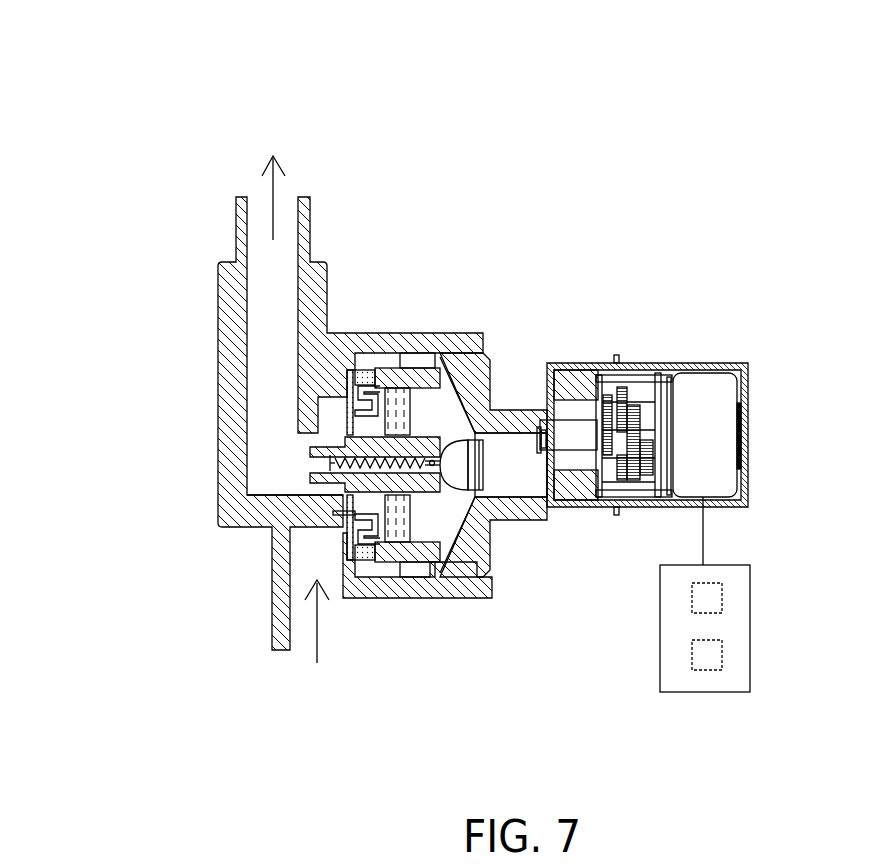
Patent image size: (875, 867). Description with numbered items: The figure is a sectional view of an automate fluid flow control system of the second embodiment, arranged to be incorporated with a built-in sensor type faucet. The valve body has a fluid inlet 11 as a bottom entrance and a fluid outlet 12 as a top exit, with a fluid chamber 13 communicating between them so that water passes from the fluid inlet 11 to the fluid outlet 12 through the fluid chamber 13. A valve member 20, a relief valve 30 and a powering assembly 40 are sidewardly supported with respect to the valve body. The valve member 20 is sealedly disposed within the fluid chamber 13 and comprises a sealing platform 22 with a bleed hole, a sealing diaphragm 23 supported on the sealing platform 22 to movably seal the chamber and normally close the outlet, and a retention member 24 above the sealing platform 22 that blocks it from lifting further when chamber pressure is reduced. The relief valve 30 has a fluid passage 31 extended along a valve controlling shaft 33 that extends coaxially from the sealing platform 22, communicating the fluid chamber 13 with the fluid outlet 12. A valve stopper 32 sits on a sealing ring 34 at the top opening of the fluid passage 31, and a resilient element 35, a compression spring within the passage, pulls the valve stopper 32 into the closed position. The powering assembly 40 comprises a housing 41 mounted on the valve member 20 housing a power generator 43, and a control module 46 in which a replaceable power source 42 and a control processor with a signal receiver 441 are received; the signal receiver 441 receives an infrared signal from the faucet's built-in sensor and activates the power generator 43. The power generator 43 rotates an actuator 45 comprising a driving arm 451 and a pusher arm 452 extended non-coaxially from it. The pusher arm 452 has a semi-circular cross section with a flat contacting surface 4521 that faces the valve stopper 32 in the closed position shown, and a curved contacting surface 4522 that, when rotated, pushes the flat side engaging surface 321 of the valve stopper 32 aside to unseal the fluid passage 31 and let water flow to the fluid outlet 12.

The fluid inlet 11 is at (300, 652).
The fluid outlet 12 is at (254, 155).
The fluid chamber 13 is at (488, 598).
The valve member 20 is at (188, 262).
The sealing platform 22 is at (372, 388).
The sealing diaphragm 23 is at (352, 400).
The retention member 24 is at (413, 372).
The relief valve 30 is at (512, 666).
The fluid passage 31 is at (297, 377).
The valve stopper 32 is at (470, 467).
The side engaging surface 321 is at (420, 383).
The valve controlling shaft 33 is at (400, 545).
The sealing ring 34 is at (497, 510).
The resilient element 35 is at (437, 565).
The powering assembly 40 is at (720, 235).
The housing 41 is at (748, 444).
The power source 42 is at (708, 593).
The power generator 43 is at (638, 385).
The signal receiver 441 is at (715, 655).
The actuator 45 is at (593, 100).
The driving arm 451 is at (571, 435).
The pusher arm 452 is at (486, 200).
The flat contacting surface 4521 is at (484, 408).
The curved contacting surface 4522 is at (462, 420).
The control module 46 is at (750, 650).